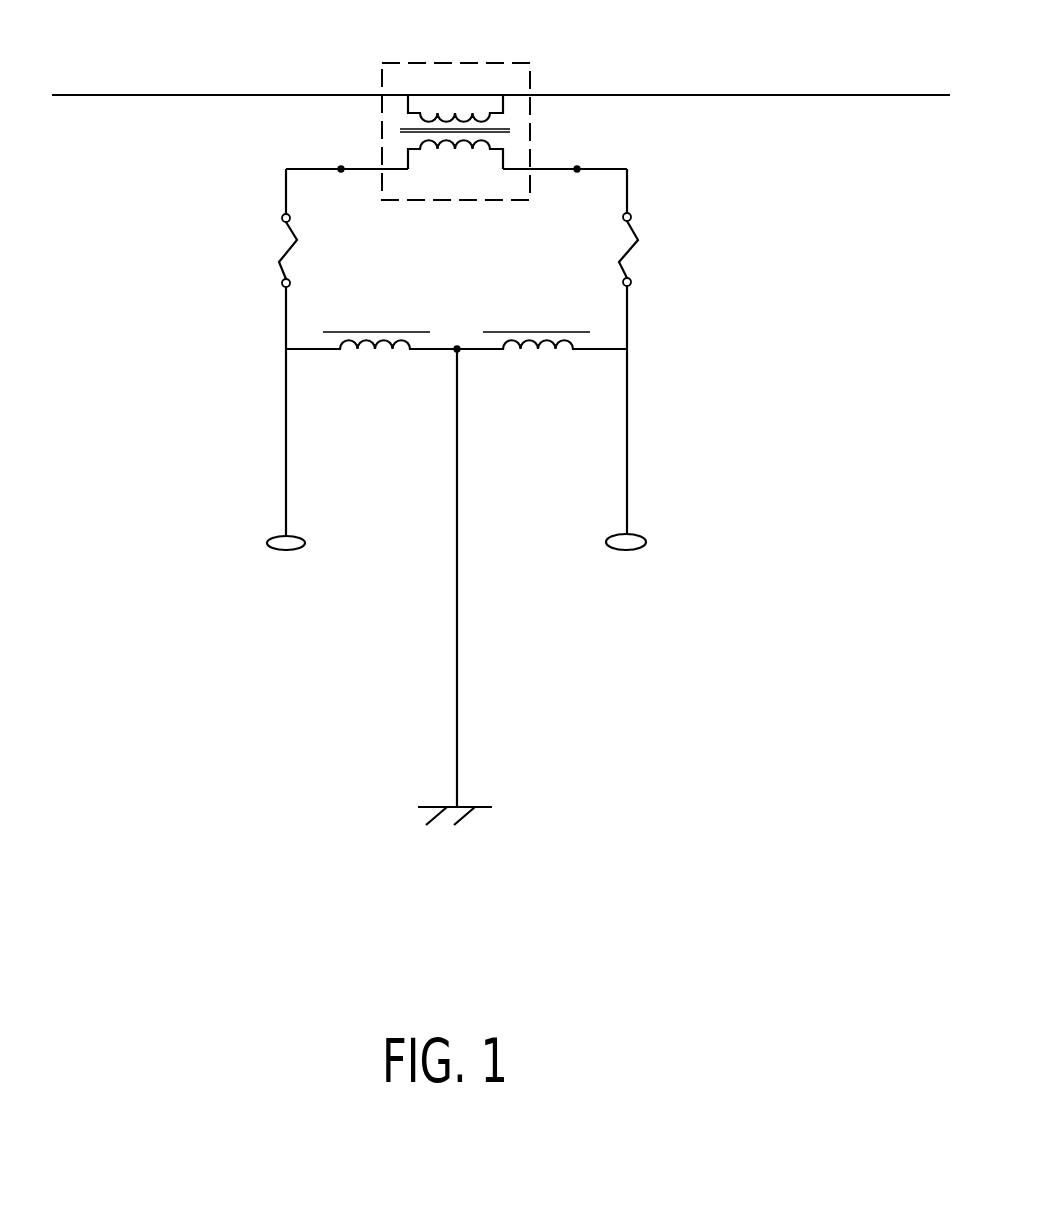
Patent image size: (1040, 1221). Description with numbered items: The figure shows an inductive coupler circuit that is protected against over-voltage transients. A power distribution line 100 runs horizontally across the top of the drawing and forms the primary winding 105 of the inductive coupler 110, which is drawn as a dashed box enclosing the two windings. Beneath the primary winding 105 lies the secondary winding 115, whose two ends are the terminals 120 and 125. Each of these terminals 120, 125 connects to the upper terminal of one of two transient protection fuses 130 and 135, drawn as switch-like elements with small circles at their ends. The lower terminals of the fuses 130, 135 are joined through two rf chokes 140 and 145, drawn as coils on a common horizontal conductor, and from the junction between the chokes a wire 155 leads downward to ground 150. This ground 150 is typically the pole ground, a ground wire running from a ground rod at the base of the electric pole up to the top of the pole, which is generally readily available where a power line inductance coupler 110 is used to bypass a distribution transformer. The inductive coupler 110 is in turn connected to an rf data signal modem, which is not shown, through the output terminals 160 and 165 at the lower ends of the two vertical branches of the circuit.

The power distribution line 100 is at (207, 95).
The primary winding 105 is at (458, 120).
The inductive coupler 110 is at (531, 128).
The secondary winding 115 is at (460, 143).
The terminal 120 is at (342, 168).
The terminal 125 is at (577, 168).
The transient protection fuse 130 is at (285, 246).
The transient protection fuse 135 is at (630, 252).
The rf choke 140 is at (385, 355).
The rf choke 145 is at (540, 352).
The ground 150 is at (476, 808).
The wire 155 is at (457, 628).
The output terminal 160 is at (270, 542).
The output terminal 165 is at (646, 541).